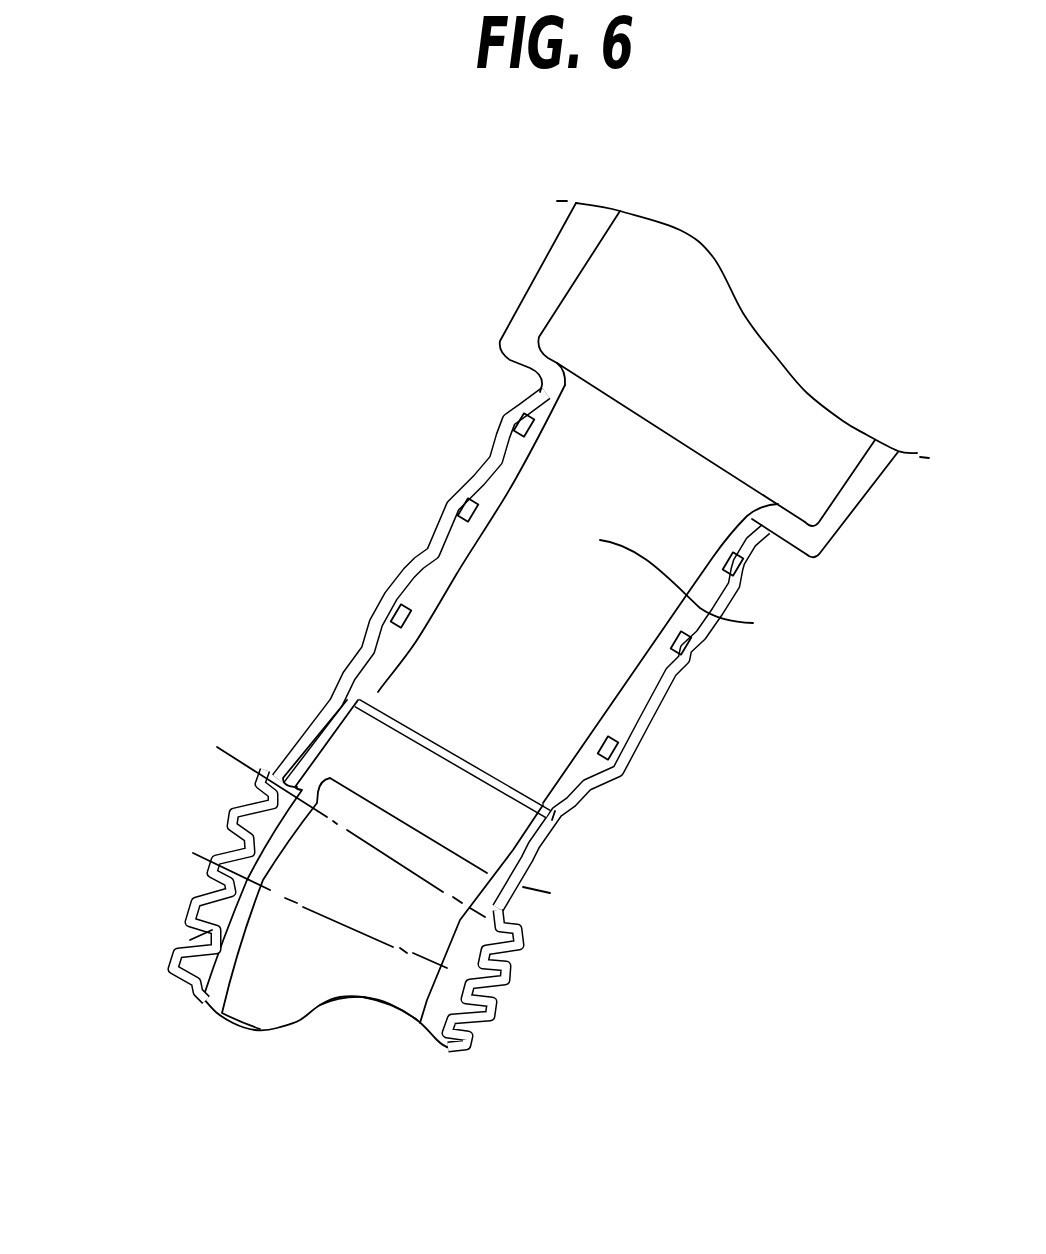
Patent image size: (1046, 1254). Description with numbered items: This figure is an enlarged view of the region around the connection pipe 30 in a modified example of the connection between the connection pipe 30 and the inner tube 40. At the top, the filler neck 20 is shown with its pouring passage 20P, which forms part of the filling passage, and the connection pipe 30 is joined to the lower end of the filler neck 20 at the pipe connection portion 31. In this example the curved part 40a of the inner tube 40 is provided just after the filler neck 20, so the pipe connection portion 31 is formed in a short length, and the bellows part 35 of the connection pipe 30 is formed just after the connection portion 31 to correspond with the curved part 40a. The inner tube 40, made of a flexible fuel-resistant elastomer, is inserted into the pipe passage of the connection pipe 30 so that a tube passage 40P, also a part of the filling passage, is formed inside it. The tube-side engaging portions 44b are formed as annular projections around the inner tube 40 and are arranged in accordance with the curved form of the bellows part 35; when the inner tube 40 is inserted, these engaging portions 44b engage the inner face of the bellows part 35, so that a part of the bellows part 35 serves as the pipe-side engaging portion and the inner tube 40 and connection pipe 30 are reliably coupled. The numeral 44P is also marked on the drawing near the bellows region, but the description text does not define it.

The filler neck 20 is at (855, 498).
The pouring passage 20P is at (705, 591).
The connection pipe 30 is at (622, 763).
The pipe connection portion 31 is at (388, 592).
The bellows part 35 is at (170, 951).
The inner tube 40 is at (497, 890).
The tube passage 40P is at (370, 977).
The curved part 40a is at (327, 950).
The bellows portion 44P is at (262, 783).
The tube-side engaging portions 44b is at (482, 973).